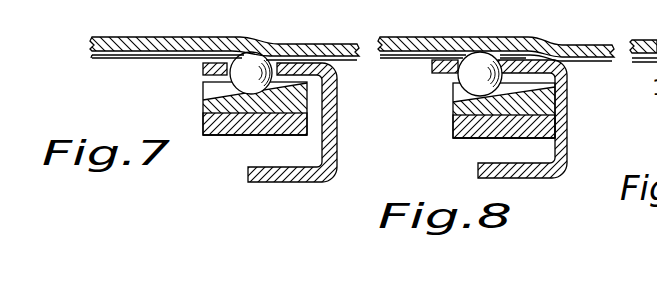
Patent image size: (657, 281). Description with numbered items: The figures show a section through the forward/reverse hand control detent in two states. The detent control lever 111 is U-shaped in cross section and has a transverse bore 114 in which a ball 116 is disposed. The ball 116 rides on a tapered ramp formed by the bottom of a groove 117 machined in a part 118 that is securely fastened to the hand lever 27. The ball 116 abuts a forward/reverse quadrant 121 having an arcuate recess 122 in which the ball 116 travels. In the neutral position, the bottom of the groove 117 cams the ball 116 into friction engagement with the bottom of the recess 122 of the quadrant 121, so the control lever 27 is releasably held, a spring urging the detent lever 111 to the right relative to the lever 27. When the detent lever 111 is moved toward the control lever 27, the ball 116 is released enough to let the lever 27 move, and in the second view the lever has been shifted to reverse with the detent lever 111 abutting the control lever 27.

In FIG. 7, the detent control lever 111 is at (336, 128).
In FIG. 8, the detent control lever 111 is at (566, 118).
In FIG. 7, the transverse bore 114 is at (252, 66).
In FIG. 8, the transverse bore 114 is at (497, 72).
In FIG. 7, the ball 116 is at (243, 57).
In FIG. 8, the ball 116 is at (473, 58).
In FIG. 7, the groove 117 is at (212, 87).
In FIG. 8, the groove 117 is at (456, 95).
In FIG. 7, the part 118 is at (208, 107).
In FIG. 8, the part 118 is at (453, 112).
In FIG. 7, the forward/reverse quadrant 121 is at (321, 44).
In FIG. 8, the forward/reverse quadrant 121 is at (578, 47).
In FIG. 7, the arcuate recess 122 is at (136, 58).
In FIG. 8, the arcuate recess 122 is at (407, 58).
In FIG. 7, the hand lever 27 is at (228, 135).
In FIG. 8, the hand lever 27 is at (453, 138).